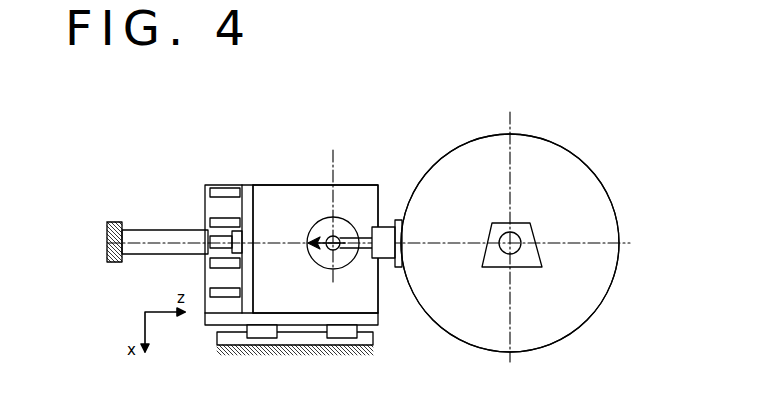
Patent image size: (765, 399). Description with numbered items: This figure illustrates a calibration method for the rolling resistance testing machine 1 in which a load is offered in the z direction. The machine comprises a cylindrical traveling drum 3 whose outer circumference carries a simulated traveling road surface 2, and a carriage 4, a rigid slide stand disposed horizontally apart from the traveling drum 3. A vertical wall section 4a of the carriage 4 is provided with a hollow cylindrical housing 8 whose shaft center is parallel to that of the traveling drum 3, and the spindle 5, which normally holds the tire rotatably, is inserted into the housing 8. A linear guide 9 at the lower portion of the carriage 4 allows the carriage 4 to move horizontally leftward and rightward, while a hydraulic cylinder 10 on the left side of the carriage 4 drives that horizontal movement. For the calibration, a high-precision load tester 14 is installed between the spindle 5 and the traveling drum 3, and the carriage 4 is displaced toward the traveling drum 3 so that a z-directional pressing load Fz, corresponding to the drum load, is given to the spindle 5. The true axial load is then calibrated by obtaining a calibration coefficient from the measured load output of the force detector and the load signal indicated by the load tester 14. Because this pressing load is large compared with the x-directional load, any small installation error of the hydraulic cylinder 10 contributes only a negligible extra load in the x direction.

The rolling resistance testing machine 1 is at (530, 95).
The simulated traveling road surface 2 is at (552, 141).
The traveling drum 3 is at (597, 200).
The carriage 4 is at (217, 182).
The vertical wall section 4a is at (266, 195).
The spindle 5 is at (340, 232).
The housing 8 is at (318, 222).
The linear guide 9 is at (368, 328).
The hydraulic cylinder 10 is at (152, 228).
The load tester 14 is at (386, 227).